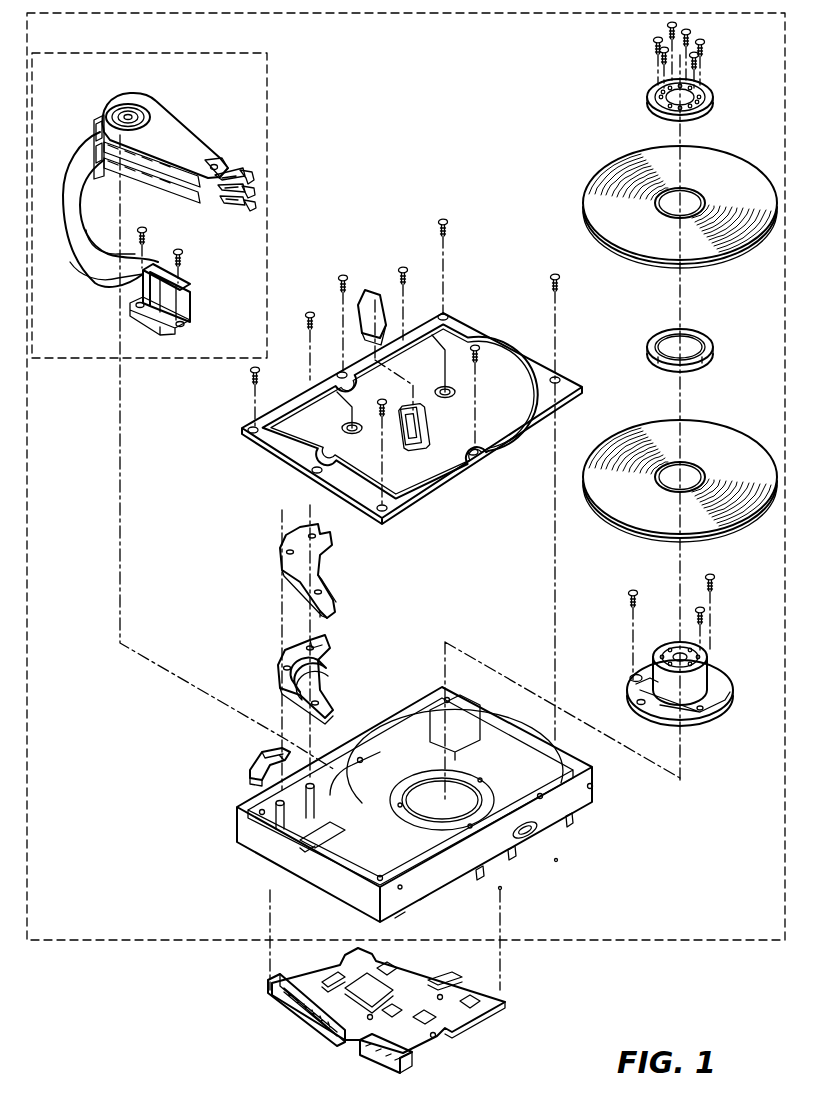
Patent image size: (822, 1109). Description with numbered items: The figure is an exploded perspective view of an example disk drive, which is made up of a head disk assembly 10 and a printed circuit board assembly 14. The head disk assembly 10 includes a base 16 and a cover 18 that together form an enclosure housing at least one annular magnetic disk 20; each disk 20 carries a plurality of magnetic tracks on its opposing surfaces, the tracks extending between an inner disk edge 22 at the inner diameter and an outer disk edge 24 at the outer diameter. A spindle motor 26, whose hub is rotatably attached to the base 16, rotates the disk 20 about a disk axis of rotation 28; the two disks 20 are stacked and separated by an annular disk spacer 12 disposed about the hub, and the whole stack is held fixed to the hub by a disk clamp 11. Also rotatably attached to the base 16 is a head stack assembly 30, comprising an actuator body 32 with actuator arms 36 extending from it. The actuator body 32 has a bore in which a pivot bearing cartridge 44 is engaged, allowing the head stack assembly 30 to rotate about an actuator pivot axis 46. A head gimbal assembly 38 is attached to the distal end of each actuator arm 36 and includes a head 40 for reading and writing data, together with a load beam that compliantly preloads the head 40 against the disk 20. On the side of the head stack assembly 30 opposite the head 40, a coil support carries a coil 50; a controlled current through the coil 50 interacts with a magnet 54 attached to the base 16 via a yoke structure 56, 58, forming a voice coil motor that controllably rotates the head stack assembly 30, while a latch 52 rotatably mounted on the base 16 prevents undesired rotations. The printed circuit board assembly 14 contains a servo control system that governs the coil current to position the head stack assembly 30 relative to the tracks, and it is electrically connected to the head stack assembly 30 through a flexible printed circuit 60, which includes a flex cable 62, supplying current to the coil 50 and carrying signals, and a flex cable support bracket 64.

The head disk assembly 10 is at (596, 942).
The disk clamp 11 is at (702, 82).
The annular disk spacer 12 is at (644, 352).
The printed circuit board assembly 14 is at (478, 1025).
The base 16 is at (535, 845).
The cover 18 is at (448, 310).
The annular magnetic disk 20 is at (732, 158).
The inner disk edge 22 is at (702, 198).
The outer disk edge 24 is at (625, 255).
The spindle motor 26 is at (715, 708).
The disk axis of rotation 28 is at (683, 283).
The head stack assembly 30 is at (187, 360).
The actuator body 32 is at (125, 104).
The actuator arm 36 is at (168, 133).
The head gimbal assembly 38 is at (230, 175).
The head 40 is at (247, 208).
The pivot bearing cartridge 44 is at (140, 109).
The actuator pivot axis 46 is at (119, 537).
The coil 50 is at (98, 122).
The latch 52 is at (250, 770).
The magnet 54 is at (328, 667).
The yoke structure 56 is at (270, 676).
The yoke structure 58 is at (288, 567).
The flexible printed circuit 60 is at (85, 163).
The flex cable 62 is at (92, 271).
The flex cable support bracket 64 is at (190, 326).